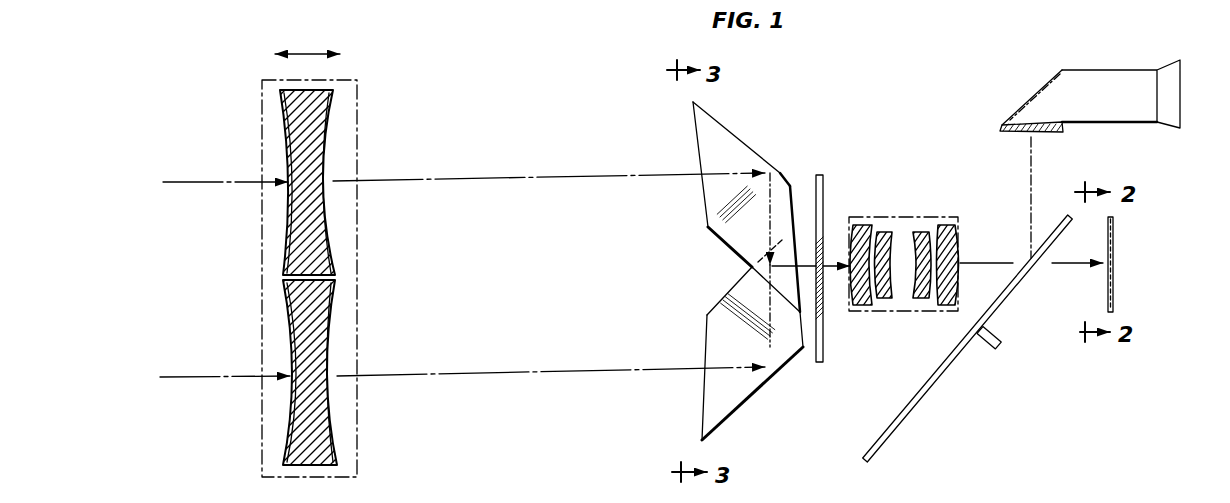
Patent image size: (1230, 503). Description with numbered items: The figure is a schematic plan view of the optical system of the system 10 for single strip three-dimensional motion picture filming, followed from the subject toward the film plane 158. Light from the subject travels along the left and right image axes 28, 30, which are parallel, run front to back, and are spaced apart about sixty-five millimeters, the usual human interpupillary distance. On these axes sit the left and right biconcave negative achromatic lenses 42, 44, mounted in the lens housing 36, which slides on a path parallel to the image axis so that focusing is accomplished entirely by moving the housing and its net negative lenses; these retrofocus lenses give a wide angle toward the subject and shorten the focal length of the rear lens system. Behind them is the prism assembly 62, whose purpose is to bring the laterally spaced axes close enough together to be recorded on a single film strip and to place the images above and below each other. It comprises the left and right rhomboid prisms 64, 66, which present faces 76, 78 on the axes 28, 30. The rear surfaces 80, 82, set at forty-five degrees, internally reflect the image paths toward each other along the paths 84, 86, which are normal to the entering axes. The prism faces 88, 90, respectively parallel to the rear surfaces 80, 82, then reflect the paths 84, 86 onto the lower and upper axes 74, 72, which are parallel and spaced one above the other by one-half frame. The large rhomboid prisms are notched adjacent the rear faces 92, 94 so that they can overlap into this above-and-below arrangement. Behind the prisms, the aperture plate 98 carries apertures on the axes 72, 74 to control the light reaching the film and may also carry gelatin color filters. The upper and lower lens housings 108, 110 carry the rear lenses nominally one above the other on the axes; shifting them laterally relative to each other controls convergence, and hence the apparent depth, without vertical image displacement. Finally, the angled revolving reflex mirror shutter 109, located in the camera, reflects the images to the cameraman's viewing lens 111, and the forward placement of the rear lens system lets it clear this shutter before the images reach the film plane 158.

The system 10 is at (667, 110).
The left image axis 28 is at (218, 376).
The right image axis 30 is at (207, 181).
The lens housing 36 is at (262, 93).
The left biconcave negative achromatic lens 42 is at (322, 338).
The right biconcave negative achromatic lens 44 is at (316, 146).
The prism assembly 62 is at (771, 142).
The left rhomboid prism 64 is at (727, 425).
The right rhomboid prism 66 is at (737, 133).
The upper axis 72 is at (832, 268).
The lower axis 74 is at (866, 303).
The prism face 76 is at (705, 413).
The prism face 78 is at (697, 145).
The rear surface 80 is at (752, 396).
The rear surface 82 is at (781, 172).
The image path 84 is at (772, 340).
The image path 86 is at (770, 205).
The prism face 88 is at (720, 303).
The prism face 90 is at (717, 235).
The rear face 92 is at (802, 328).
The rear face 94 is at (795, 209).
The aperture plate 98 is at (821, 365).
The upper lens housing 108 is at (909, 238).
The lower lens housing 110 is at (916, 216).
The revolving reflex mirror shutter 109 is at (893, 432).
The viewing lens 111 is at (1002, 131).
The film plane 158 is at (1115, 277).